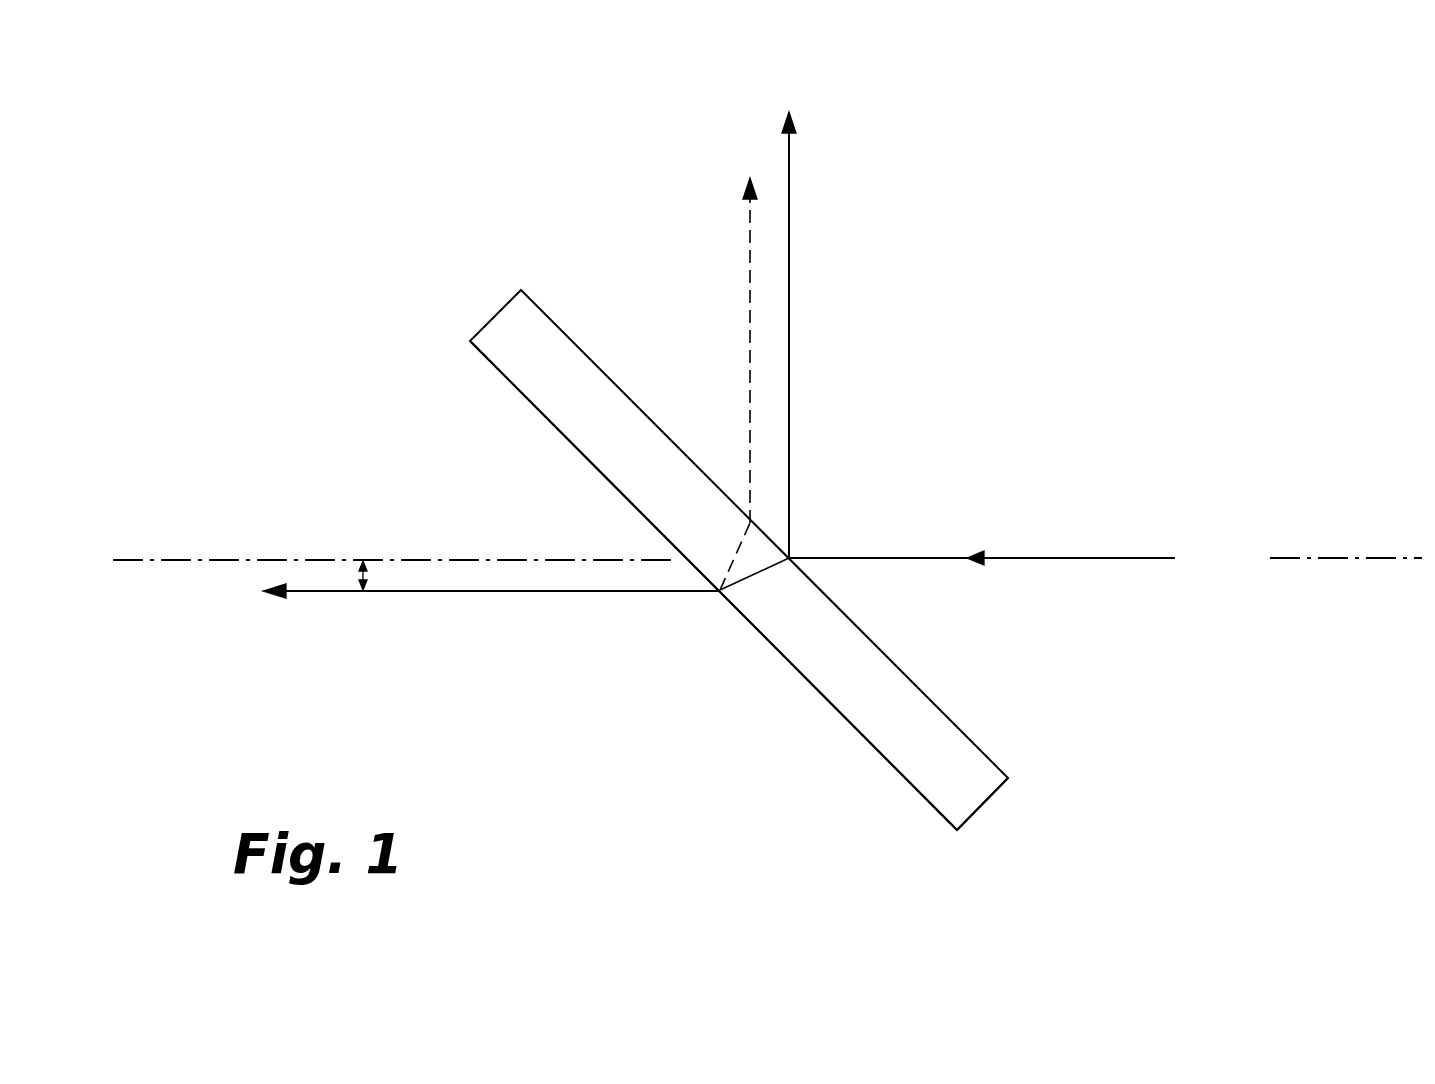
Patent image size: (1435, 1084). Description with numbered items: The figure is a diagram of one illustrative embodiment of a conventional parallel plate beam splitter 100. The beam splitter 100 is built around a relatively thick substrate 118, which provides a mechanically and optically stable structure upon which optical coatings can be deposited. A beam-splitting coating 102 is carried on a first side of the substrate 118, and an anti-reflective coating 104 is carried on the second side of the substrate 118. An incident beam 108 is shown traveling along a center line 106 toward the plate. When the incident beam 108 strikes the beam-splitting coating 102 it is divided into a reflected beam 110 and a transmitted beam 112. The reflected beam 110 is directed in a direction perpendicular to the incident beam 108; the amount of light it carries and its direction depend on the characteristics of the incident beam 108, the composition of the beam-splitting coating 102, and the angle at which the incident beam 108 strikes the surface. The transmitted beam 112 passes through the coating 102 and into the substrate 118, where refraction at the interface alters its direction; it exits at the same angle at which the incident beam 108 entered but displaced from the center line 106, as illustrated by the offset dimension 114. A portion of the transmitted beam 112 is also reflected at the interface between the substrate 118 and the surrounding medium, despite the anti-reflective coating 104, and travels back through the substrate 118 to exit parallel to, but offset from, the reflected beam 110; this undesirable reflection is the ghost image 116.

The parallel plate beam splitter 100 is at (468, 280).
The beam-splitting coating 102 is at (917, 683).
The anti-reflective coating 104 is at (835, 708).
The center line 106 is at (1307, 558).
The incident beam 108 is at (1133, 558).
The reflected beam 110 is at (789, 317).
The transmitted beam 112 is at (550, 594).
The offset dimension 114 is at (363, 577).
The ghost image 116 is at (748, 287).
The substrate 118 is at (967, 790).